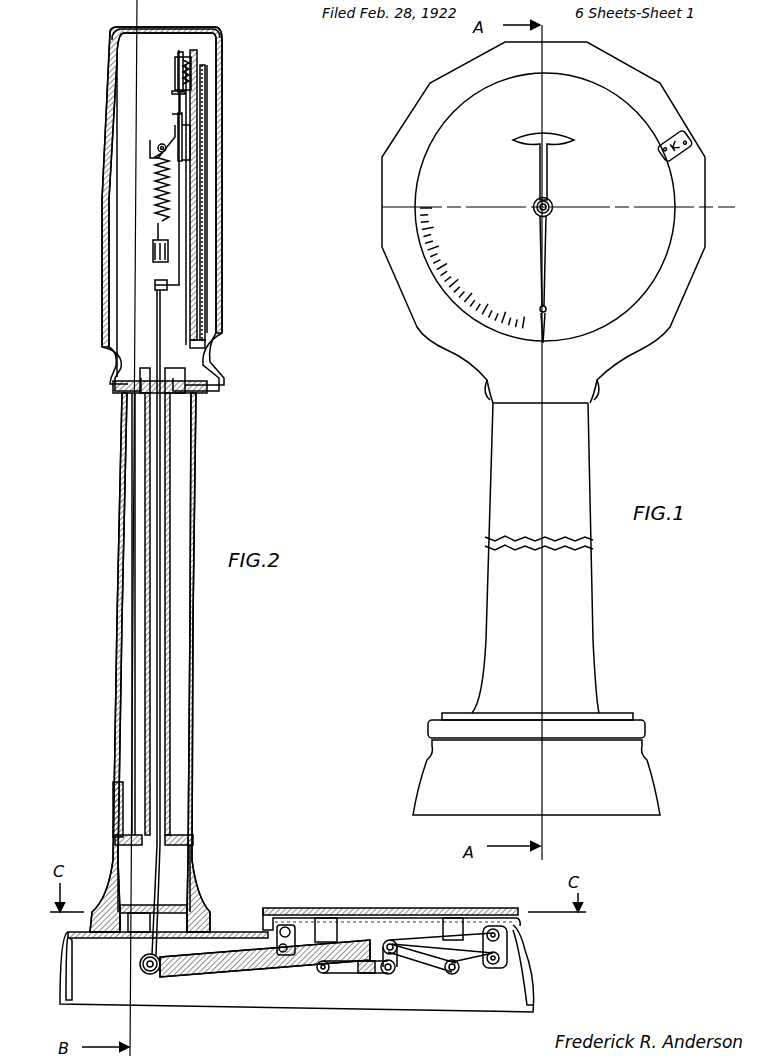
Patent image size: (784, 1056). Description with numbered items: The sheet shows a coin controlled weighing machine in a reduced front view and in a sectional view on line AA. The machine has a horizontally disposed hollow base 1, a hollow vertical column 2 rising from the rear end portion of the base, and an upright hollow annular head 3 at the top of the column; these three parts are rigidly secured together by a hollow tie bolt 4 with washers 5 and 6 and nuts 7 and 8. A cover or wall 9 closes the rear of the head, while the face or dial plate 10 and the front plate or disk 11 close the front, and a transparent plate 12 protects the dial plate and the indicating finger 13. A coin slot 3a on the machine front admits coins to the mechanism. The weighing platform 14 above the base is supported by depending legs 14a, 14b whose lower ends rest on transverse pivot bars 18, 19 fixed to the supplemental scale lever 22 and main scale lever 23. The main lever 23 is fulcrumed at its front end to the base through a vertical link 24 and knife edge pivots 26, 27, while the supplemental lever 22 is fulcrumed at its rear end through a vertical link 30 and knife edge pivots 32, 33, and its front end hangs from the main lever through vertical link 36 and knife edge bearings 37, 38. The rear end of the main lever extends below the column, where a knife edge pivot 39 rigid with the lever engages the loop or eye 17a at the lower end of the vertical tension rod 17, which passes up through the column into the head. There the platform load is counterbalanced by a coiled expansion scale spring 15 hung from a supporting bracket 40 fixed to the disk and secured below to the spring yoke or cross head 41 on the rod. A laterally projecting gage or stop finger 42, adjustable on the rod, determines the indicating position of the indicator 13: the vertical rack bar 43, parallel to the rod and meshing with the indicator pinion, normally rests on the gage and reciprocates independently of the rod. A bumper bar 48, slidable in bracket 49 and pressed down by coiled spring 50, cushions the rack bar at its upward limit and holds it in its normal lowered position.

In FIG. 1, the hollow base 1 is at (657, 782).
In FIG. 2, the hollow base 1 is at (527, 1000).
In FIG. 1, the hollow vertical column 2 is at (598, 583).
In FIG. 2, the hollow vertical column 2 is at (197, 662).
In FIG. 1, the hollow annular head 3 is at (680, 303).
In FIG. 2, the hollow annular head 3 is at (192, 28).
In FIG. 1, the coin slot 3a is at (690, 140).
In FIG. 2, the hollow tie bolt 4 is at (168, 613).
In FIG. 2, the washer 5 is at (183, 378).
In FIG. 2, the washer 6 is at (174, 906).
In FIG. 2, the nut 7 is at (142, 370).
In FIG. 2, the nut 8 is at (140, 920).
In FIG. 2, the rear cover 9 is at (102, 247).
In FIG. 1, the dial plate 10 is at (433, 273).
In FIG. 2, the dial plate 10 is at (194, 334).
In FIG. 2, the front plate 11 is at (190, 315).
In FIG. 2, the transparent plate 12 is at (212, 167).
In FIG. 1, the indicating finger 13 is at (549, 283).
In FIG. 2, the indicating finger 13 is at (200, 267).
In FIG. 1, the weighing platform 14 is at (610, 718).
In FIG. 2, the weighing platform 14 is at (504, 909).
In FIG. 2, the platform leg 14a is at (328, 930).
In FIG. 2, the platform leg 14b is at (452, 930).
In FIG. 2, the scale spring 15 is at (158, 192).
In FIG. 2, the tension rod 17 is at (160, 747).
In FIG. 2, the loop or eye 17a is at (142, 963).
In FIG. 2, the transverse pivot bar 18 is at (321, 970).
In FIG. 2, the transverse pivot bar 19 is at (452, 975).
In FIG. 2, the supplemental scale lever 22 is at (348, 974).
In FIG. 2, the main scale lever 23 is at (433, 962).
In FIG. 2, the vertical link 24 is at (507, 968).
In FIG. 2, the knife edge pivot 26 is at (512, 939).
In FIG. 2, the knife edge pivot 27 is at (489, 965).
In FIG. 2, the vertical link 30 is at (270, 947).
In FIG. 2, the knife edge pivot 32 is at (286, 927).
In FIG. 2, the knife edge pivot 33 is at (290, 940).
In FIG. 2, the vertical link 36 is at (398, 944).
In FIG. 2, the knife edge bearing 37 is at (393, 942).
In FIG. 2, the knife edge bearing 38 is at (388, 975).
In FIG. 2, the knife edge pivot 39 is at (146, 970).
In FIG. 2, the supporting bracket 40 is at (158, 156).
In FIG. 2, the spring yoke or cross head 41 is at (153, 265).
In FIG. 2, the gage or stop finger 42 is at (156, 288).
In FIG. 2, the rack bar 43 is at (177, 118).
In FIG. 2, the bumper bar 48 is at (173, 95).
In FIG. 2, the bracket 49 is at (180, 56).
In FIG. 2, the coiled spring 50 is at (176, 72).